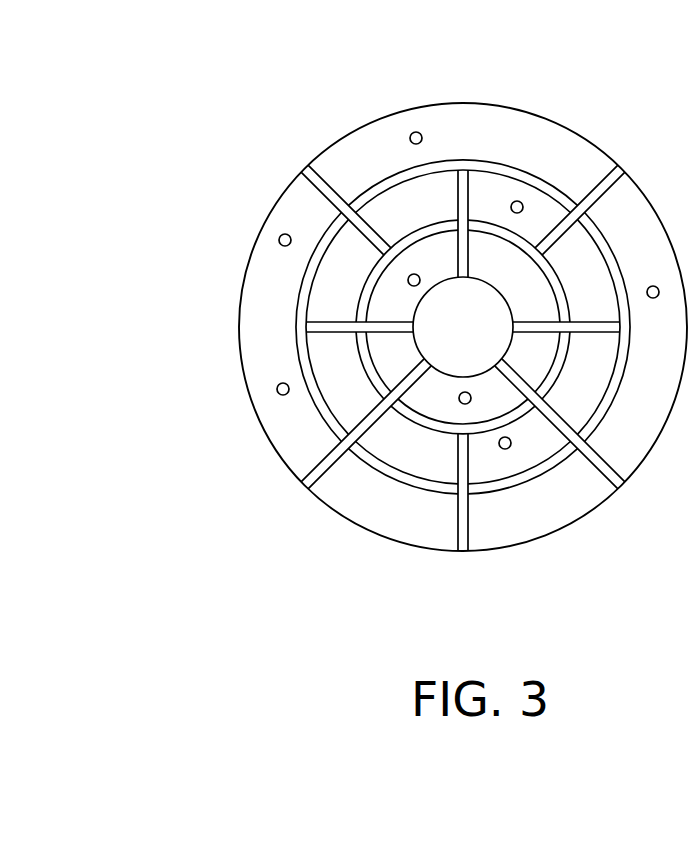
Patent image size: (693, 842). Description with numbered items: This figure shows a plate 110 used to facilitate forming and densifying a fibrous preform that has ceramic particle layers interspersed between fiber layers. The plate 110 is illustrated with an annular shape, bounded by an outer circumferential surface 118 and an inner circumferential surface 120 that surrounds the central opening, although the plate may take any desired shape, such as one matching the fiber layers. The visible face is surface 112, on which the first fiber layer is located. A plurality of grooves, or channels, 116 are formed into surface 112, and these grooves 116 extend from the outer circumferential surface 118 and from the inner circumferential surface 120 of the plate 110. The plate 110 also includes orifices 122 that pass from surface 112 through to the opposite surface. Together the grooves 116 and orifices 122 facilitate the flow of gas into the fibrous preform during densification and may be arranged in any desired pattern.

The plate 110 is at (258, 113).
The surface 112 is at (383, 137).
The grooves 116 is at (292, 278).
The outer circumferential surface 118 is at (572, 525).
The inner circumferential surface 120 is at (437, 285).
The orifices 122 is at (520, 190).